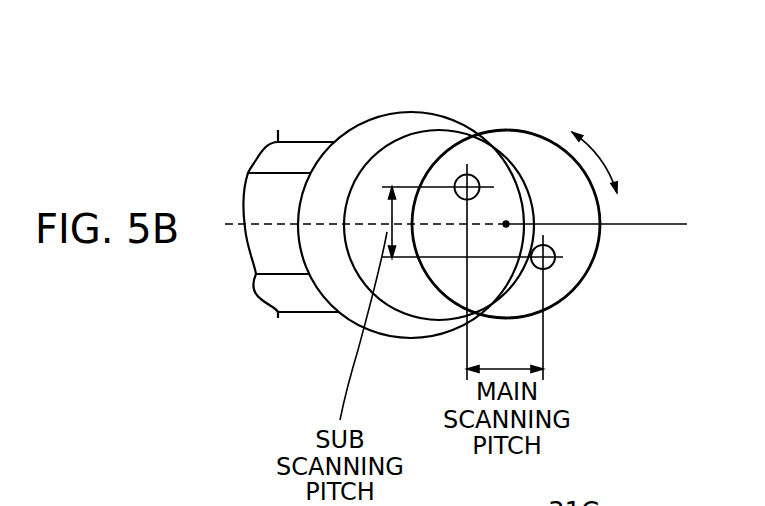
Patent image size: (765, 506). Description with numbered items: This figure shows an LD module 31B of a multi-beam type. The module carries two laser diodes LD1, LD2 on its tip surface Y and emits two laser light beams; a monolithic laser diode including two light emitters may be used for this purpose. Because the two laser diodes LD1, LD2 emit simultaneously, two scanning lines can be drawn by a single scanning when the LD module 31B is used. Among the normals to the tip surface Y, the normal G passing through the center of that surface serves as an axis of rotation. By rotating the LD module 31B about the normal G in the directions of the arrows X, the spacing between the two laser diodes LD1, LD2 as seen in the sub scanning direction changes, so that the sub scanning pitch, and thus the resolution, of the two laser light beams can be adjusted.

The LD module 31B is at (545, 94).
The laser diode LD1 is at (478, 178).
The laser diode LD2 is at (555, 251).
The normal G is at (468, 224).
The arrows X is at (597, 162).
The tip surface Y is at (553, 288).